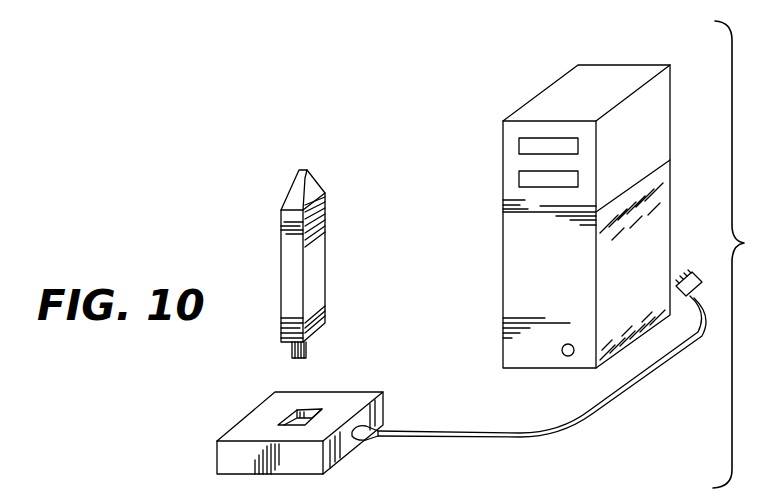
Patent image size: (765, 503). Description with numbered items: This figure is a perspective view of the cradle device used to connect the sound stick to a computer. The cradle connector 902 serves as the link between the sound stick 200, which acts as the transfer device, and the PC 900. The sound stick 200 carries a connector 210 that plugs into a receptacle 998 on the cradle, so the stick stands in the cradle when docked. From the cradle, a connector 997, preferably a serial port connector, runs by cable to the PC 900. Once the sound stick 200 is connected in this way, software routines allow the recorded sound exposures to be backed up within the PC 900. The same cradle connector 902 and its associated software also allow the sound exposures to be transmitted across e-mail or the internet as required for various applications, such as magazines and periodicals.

The PC 900 is at (540, 93).
The connector 997 is at (712, 240).
The sound stick 200 is at (281, 262).
The connector 210 is at (308, 345).
The cradle connector 902 is at (238, 424).
The receptacle 998 is at (318, 412).